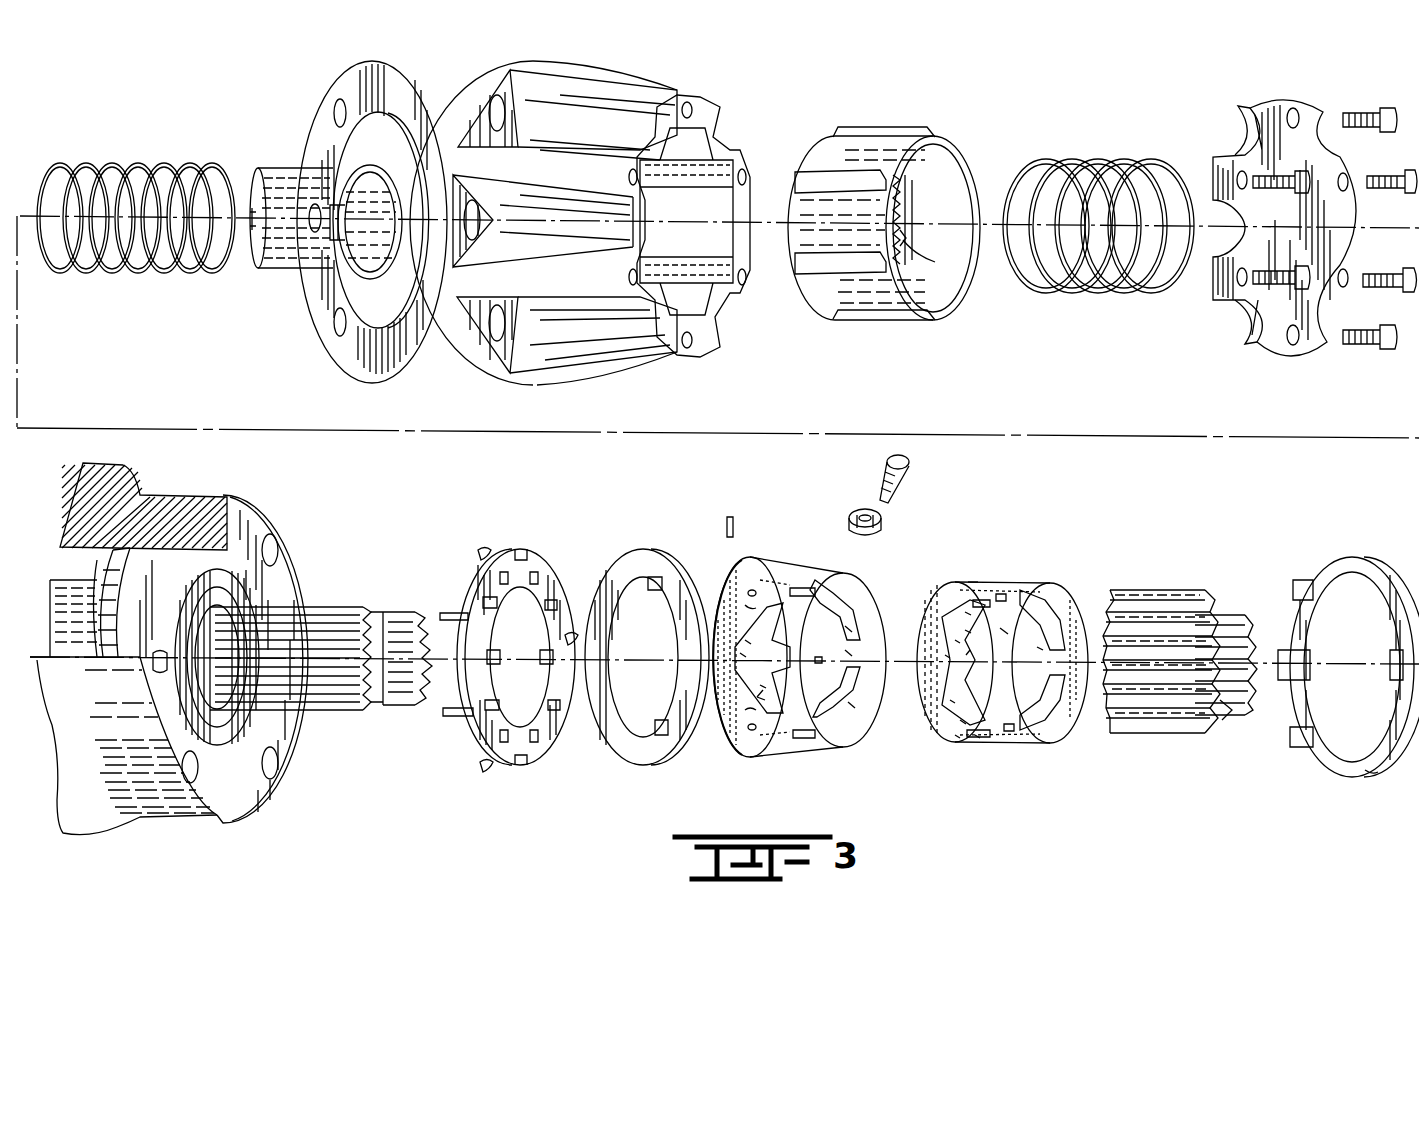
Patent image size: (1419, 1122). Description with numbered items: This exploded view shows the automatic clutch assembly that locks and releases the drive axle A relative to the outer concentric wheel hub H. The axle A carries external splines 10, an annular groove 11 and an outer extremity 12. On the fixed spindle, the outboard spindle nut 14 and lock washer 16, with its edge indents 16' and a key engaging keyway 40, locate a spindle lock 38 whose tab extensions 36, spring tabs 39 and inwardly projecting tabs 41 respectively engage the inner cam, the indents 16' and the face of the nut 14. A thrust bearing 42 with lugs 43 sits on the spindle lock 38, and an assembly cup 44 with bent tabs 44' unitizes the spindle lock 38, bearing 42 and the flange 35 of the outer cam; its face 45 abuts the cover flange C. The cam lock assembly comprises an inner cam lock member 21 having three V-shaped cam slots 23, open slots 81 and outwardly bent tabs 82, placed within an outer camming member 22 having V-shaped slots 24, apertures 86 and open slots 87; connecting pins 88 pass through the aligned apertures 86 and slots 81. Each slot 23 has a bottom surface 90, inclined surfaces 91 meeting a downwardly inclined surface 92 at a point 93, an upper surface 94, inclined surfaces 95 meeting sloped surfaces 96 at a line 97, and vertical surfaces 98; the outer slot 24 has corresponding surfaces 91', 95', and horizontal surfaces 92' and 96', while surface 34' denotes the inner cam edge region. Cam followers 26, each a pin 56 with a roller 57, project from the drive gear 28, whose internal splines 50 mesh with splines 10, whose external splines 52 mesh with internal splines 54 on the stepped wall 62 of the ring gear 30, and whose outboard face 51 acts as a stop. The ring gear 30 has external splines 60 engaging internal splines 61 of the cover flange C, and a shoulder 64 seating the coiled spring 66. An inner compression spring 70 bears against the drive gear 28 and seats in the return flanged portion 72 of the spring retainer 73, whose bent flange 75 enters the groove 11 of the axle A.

The external axially directed splines 10 is at (332, 711).
The annular groove 11 is at (372, 609).
The outer extremity of the axle 12 is at (405, 615).
The outboard spindle nut 14 is at (238, 593).
The lock washer 16 is at (224, 656).
The indents 16' is at (150, 563).
The inner cam lock member 21 is at (1004, 659).
The outer camming member 22 is at (869, 652).
The inner cam slots 23 is at (1045, 605).
The outer cam slots 24 is at (835, 595).
The cam follower 26 is at (899, 513).
The drive gear 28 is at (1185, 669).
The ring gear 30 is at (898, 210).
The follower surface 34' is at (933, 736).
The flange 35 is at (755, 560).
The tab extensions 36 is at (545, 560).
The spindle lock 38 is at (525, 639).
The spring tabs 39 is at (487, 563).
The keyway 40 is at (195, 608).
The inwardly projecting tabs 41 is at (470, 768).
The thrust bearing 42 is at (636, 655).
The lugs 43 is at (655, 583).
The assembly cup 44 is at (1343, 659).
The tabs 44' is at (1335, 672).
The face of assembly cup 45 is at (1370, 770).
The internal splines of drive gear 50 is at (1228, 712).
The outboard face of drive gear 51 is at (1222, 717).
The external splines of drive gear 52 is at (1160, 722).
The internal spline portions 54 is at (920, 248).
The pin 56 is at (912, 466).
The roller 57 is at (858, 512).
The external splined portions 60 is at (880, 128).
The internal splined portions 61 is at (712, 270).
The inwardly stepped internal wall 62 is at (912, 197).
The shoulder 64 is at (905, 248).
The coiled spring 66 is at (1100, 290).
The compression spring 70 is at (112, 270).
The return flanged portion 72 is at (366, 160).
The spring retainer 73 is at (272, 266).
The flange 75 is at (252, 216).
The open slots 81 is at (955, 595).
The outwardly bent tabs 82 is at (1020, 585).
The apertures 86 is at (752, 593).
The open slots 87 is at (812, 585).
The connecting pin 88 is at (722, 522).
The bottom horizontal bearing surface 90 is at (740, 655).
The inclined bearing surfaces 91 is at (803, 672).
The inclined bearing surfaces 91' is at (699, 630).
The downwardly inclined bearing surface 92 is at (937, 676).
The lower bearing surface 92' is at (731, 681).
The intersection point 93 is at (965, 630).
The upper horizontal bearing surface 94 is at (757, 697).
The upper inclined bearing surfaces 95 is at (985, 702).
The upper inclined bearing surfaces 95' is at (829, 643).
The downwardly inclined bearing surfaces 96 is at (924, 660).
The upper bearing surface 96' is at (832, 695).
The intersection point 97 is at (1037, 647).
The vertical surfaces 98 is at (972, 580).
The drive axle A is at (329, 649).
The cover flange C is at (590, 211).
The wheel hub H is at (180, 643).